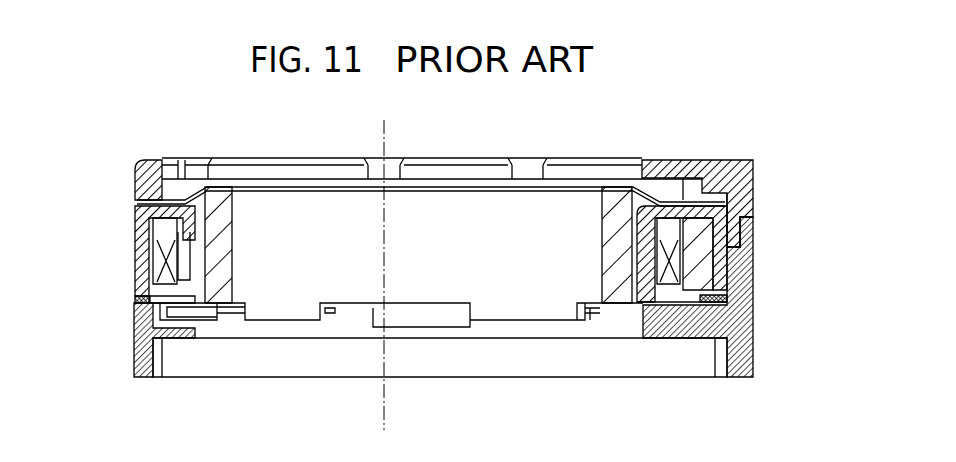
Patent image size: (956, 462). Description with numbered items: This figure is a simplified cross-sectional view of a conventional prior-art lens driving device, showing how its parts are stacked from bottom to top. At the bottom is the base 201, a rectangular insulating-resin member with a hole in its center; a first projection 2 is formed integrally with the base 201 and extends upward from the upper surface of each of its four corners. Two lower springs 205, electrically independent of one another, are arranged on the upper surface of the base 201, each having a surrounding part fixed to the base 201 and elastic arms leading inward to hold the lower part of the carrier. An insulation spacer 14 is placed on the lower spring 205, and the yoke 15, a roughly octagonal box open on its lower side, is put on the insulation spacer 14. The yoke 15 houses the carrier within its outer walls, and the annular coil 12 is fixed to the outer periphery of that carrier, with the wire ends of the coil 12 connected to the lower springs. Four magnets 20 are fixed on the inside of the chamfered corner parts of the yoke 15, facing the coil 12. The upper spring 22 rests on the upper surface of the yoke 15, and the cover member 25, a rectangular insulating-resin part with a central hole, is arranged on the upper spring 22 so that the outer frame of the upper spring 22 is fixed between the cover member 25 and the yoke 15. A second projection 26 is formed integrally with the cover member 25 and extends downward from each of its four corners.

The first projection 2 is at (743, 293).
The base 201 is at (743, 358).
The cover member 25 is at (712, 165).
The second projection 26 is at (753, 198).
The upper spring 22 is at (657, 193).
The yoke 15 is at (137, 225).
The insulation spacer 14 is at (137, 297).
The lower spring 205 is at (137, 300).
The coil 12 is at (667, 278).
The magnet 20 is at (700, 278).